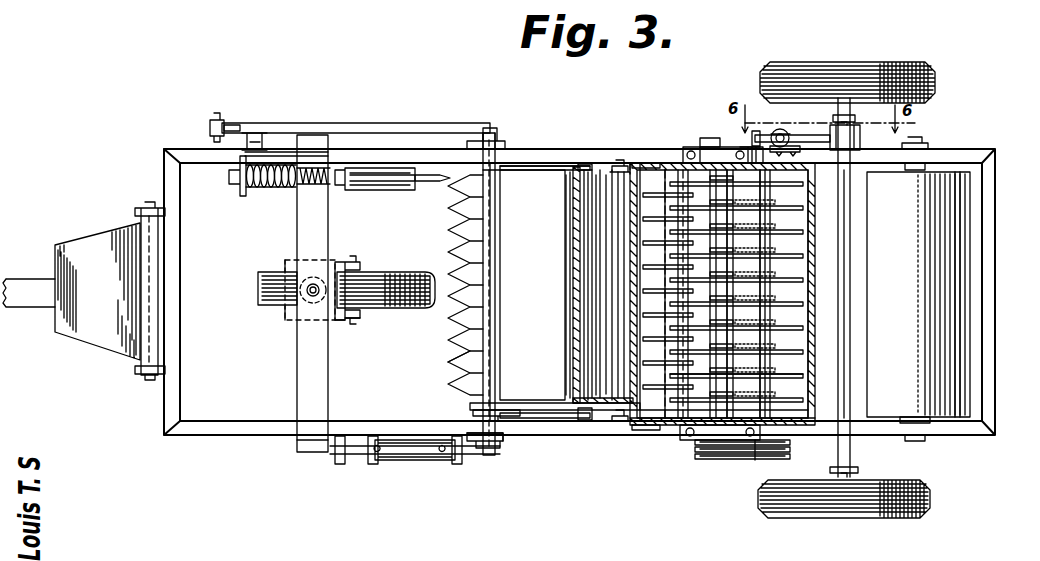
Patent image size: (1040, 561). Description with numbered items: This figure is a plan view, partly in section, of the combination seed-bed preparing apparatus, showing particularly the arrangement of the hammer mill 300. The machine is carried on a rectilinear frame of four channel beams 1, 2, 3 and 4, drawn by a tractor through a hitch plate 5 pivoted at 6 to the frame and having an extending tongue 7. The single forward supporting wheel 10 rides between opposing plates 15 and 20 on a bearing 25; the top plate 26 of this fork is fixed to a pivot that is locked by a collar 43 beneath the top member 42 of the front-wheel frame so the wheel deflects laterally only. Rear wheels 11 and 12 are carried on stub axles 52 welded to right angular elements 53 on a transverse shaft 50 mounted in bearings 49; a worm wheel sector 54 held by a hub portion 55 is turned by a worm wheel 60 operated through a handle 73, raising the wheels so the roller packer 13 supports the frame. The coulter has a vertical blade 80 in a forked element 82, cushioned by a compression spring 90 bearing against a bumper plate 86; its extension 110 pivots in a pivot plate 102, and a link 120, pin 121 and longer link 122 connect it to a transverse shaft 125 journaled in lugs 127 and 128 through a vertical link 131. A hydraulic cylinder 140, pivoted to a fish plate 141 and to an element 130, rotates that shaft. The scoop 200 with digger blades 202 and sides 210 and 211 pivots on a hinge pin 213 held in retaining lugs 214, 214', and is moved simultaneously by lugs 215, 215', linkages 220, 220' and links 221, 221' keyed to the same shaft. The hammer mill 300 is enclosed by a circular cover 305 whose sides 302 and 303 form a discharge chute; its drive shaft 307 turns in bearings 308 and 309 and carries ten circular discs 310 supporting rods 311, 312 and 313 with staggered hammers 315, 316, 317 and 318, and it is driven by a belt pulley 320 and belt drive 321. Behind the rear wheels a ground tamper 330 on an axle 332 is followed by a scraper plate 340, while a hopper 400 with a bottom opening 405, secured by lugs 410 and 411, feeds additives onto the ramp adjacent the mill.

The channel beam 1 is at (590, 434).
The channel beam 2 is at (560, 165).
The channel beam 3 is at (180, 298).
The channel beam 4 is at (984, 242).
The hitch plate 5 is at (92, 236).
The pivot 6 is at (151, 204).
The tongue 7 is at (22, 288).
The forward supporting wheel 10 is at (386, 272).
The rear wheel 11 is at (818, 520).
The rear wheel 12 is at (856, 68).
The roller packer 13 is at (978, 293).
The plate 15 is at (360, 265).
The plate 20 is at (362, 322).
The bearing 25 is at (370, 316).
The top plate 26 is at (286, 268).
The top member 42 is at (324, 369).
The collar 43 is at (306, 297).
The bearing 49 is at (836, 164).
The transverse shaft 50 is at (848, 260).
The stub axle 52 is at (850, 114).
The right angular element 53 is at (840, 120).
The worm wheel sector 54 is at (780, 136).
The hub portion 55 is at (860, 130).
The worm wheel 60 is at (774, 130).
The handle 73 is at (750, 140).
The vertical blade 80 is at (428, 180).
The forked element 82 is at (380, 190).
The bumper plate 86 is at (240, 188).
The compression spring 90 is at (268, 182).
The pivot plate 102 is at (290, 150).
The extension 110 is at (258, 132).
The link 120 is at (232, 122).
The pin 121 is at (213, 116).
The link 122 is at (352, 122).
The transverse shaft 125 is at (456, 236).
The lug 127 is at (498, 446).
The lug 128 is at (498, 140).
The element 130 is at (482, 455).
The link 131 is at (494, 134).
The hydraulic cylinder 140 is at (416, 458).
The fish plate 141 is at (310, 450).
The scoop 200 is at (465, 378).
The digger blade 202 is at (452, 357).
The side 210 is at (518, 404).
The side 211 is at (534, 168).
The hinge pin 213 is at (696, 140).
The retaining lug 214 is at (646, 446).
The retaining lug 214' is at (645, 142).
The lug 215 is at (572, 435).
The lug 215' is at (592, 150).
The linkage 220 is at (545, 434).
The linkage 220' is at (545, 143).
The link 221 is at (473, 411).
The link 221' is at (460, 148).
The hammer mill 300 is at (826, 310).
The cover side 302 is at (794, 426).
The cover side 303 is at (634, 162).
The circular cover 305 is at (808, 340).
The drive shaft 307 is at (752, 412).
The bearing 308 is at (720, 146).
The bearing 309 is at (694, 438).
The circular disc 310 is at (756, 400).
The hammer supporting rod 311 is at (765, 312).
The hammer supporting rod 312 is at (732, 326).
The hammer supporting rod 313 is at (672, 320).
The hammer 315 is at (800, 190).
The hammer 316 is at (730, 182).
The hammer 317 is at (660, 198).
The hammer 318 is at (750, 248).
The belt pulley 320 is at (714, 460).
The belt drive 321 is at (778, 456).
The ground tamper 330 is at (962, 321).
The axle 332 is at (920, 138).
The scraper plate 340 is at (966, 415).
The hopper 400 is at (572, 290).
The opening 405 is at (614, 326).
The lug 410 is at (612, 166).
The lug 411 is at (616, 426).